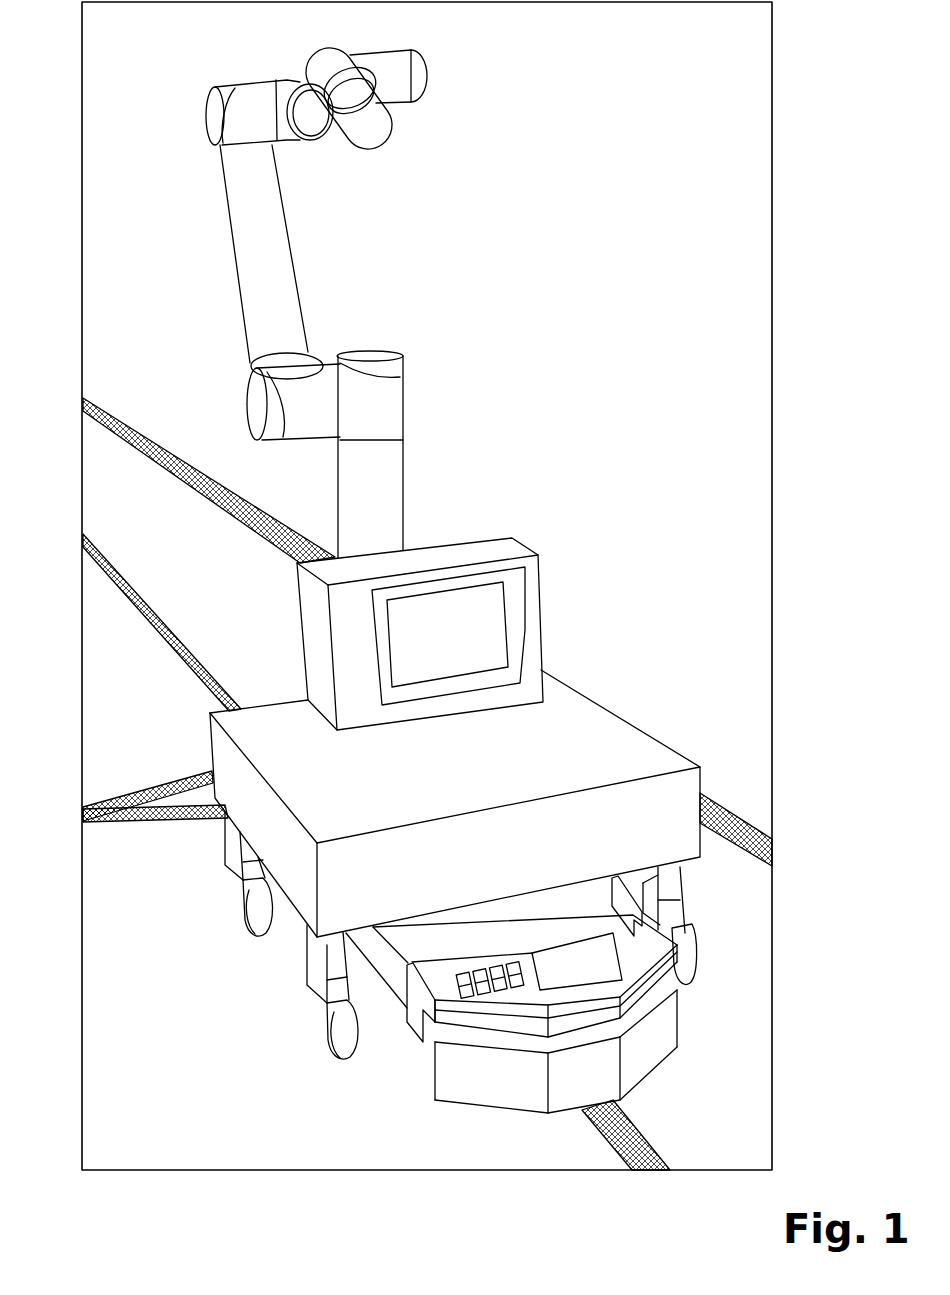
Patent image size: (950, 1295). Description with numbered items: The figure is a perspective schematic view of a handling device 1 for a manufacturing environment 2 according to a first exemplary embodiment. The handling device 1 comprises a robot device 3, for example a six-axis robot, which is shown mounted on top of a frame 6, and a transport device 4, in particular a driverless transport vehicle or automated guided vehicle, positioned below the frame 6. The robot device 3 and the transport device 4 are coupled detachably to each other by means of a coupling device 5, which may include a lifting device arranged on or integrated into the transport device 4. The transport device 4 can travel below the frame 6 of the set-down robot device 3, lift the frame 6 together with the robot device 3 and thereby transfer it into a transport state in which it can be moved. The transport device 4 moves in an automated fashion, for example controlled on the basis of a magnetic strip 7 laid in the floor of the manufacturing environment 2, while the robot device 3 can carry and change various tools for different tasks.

The handling device 1 is at (807, 667).
The manufacturing environment 2 is at (730, 543).
The robot device 3 is at (408, 330).
The transport device 4 is at (709, 1011).
The coupling device 5 is at (740, 769).
The frame 6 is at (259, 820).
The magnetic strip 7 is at (641, 1146).